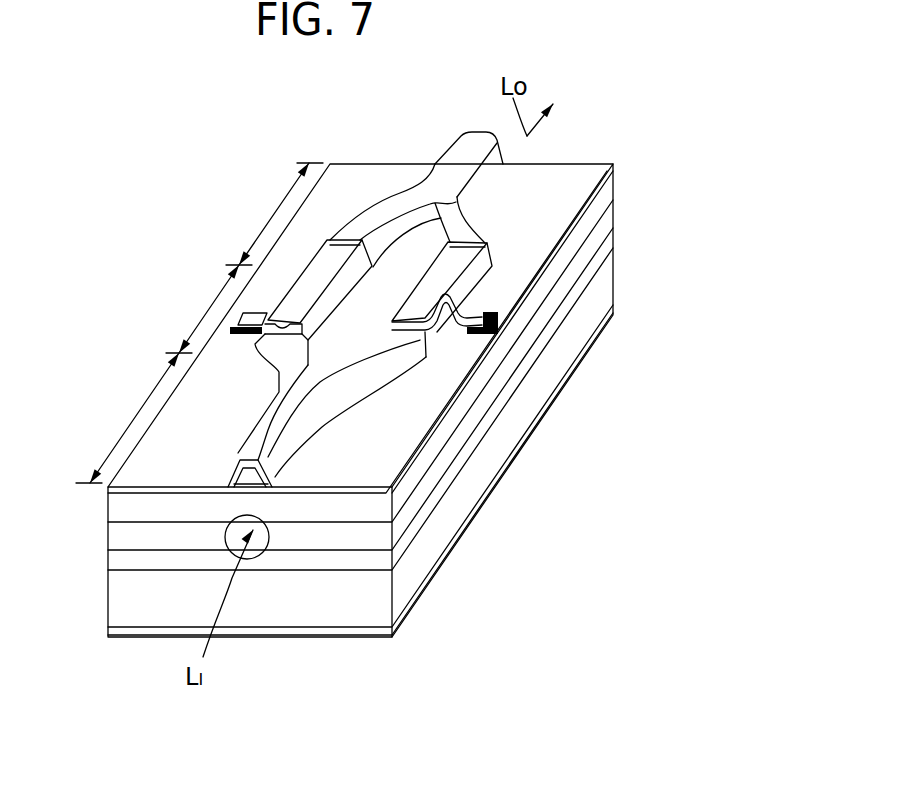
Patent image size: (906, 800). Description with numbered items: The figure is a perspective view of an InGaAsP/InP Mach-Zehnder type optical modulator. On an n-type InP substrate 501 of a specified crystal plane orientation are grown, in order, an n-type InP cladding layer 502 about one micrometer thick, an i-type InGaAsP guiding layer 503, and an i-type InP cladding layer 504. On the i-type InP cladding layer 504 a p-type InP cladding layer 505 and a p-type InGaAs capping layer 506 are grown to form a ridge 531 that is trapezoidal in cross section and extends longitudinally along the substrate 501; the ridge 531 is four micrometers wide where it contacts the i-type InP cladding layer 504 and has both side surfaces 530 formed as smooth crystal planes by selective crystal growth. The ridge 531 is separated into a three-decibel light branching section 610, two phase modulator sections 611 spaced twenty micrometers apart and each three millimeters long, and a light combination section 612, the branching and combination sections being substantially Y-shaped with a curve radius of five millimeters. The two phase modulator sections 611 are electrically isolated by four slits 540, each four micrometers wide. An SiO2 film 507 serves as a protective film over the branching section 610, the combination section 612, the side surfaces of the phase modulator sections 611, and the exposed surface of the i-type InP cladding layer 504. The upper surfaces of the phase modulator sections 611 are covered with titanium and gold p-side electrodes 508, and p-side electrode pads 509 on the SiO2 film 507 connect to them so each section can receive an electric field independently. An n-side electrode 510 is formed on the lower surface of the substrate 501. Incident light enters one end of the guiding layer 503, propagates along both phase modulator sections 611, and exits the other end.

The n-type InP substrate 501 is at (341, 594).
The n-type InP cladding layer 502 is at (381, 637).
The i-type InGaAsP guiding layer 503 is at (328, 538).
The i-type InP cladding layer 504 is at (310, 510).
The p-type InP cladding layer 505 is at (237, 483).
The p-type InGaAs capping layer 506 is at (237, 468).
The SiO2 film 507 is at (128, 491).
The p-side electrode 508 is at (425, 283).
The p-side electrode pad 509 is at (487, 327).
The n-side electrode 510 is at (477, 518).
The side surface 530 is at (290, 473).
The ridge 531 is at (258, 486).
The slit 540 is at (487, 257).
The 3 dB light branching section 610 is at (122, 431).
The phase modulator section 611 is at (203, 318).
The light combination section 612 is at (263, 232).